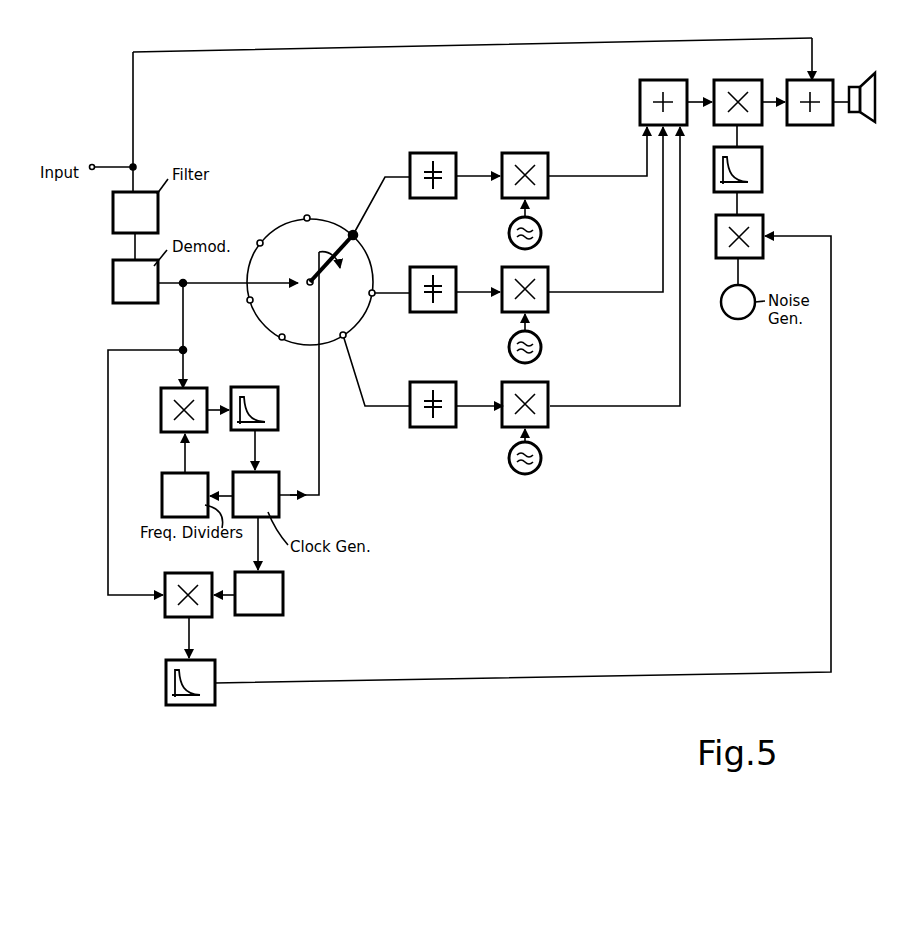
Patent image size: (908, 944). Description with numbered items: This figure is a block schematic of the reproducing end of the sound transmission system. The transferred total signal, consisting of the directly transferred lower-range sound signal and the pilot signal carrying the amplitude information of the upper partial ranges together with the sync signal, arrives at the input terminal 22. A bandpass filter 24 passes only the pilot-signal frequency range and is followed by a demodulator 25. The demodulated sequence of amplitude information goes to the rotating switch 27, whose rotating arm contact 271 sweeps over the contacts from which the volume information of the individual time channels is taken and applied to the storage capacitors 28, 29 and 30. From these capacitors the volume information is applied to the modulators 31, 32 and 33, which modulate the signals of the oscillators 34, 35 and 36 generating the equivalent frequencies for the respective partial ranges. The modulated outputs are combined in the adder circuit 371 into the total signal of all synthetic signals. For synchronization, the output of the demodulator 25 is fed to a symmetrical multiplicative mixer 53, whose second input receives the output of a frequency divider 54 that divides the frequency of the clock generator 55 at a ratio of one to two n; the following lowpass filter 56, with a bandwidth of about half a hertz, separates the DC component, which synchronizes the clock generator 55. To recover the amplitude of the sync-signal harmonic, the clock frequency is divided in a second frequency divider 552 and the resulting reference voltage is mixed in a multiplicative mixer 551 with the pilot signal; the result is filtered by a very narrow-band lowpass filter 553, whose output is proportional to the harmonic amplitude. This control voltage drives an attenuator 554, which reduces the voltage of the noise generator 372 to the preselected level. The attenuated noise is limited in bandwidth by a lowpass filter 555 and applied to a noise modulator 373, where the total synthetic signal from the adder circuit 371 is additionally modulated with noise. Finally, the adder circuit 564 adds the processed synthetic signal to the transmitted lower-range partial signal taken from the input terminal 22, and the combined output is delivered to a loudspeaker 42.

The input terminal 22 is at (96, 156).
The bandpass filter 24 is at (150, 212).
The demodulator 25 is at (140, 292).
The rotating switch 27 is at (309, 272).
The switch arm contact 271 is at (350, 229).
The storage capacitor 28 is at (433, 153).
The storage capacitor 29 is at (434, 268).
The storage capacitor 30 is at (434, 390).
The modulator 31 is at (527, 155).
The modulator 32 is at (541, 278).
The modulator 33 is at (543, 392).
The oscillator 34 is at (509, 233).
The oscillator 35 is at (509, 347).
The oscillator 36 is at (509, 458).
The adder circuit 371 is at (664, 83).
The noise modulator 373 is at (735, 84).
The adder circuit 564 is at (826, 84).
The loudspeaker 42 is at (862, 110).
The lowpass filter 555 is at (763, 168).
The attenuator 554 is at (752, 224).
The noise generator 372 is at (740, 310).
The symmetrical multiplicative mixer 53 is at (165, 410).
The lowpass filter 56 is at (271, 408).
The frequency divider 54 is at (166, 497).
The clock generator 55 is at (272, 502).
The multiplicative mixer 551 is at (188, 573).
The second frequency divider 552 is at (283, 593).
The lowpass filter 553 is at (205, 668).